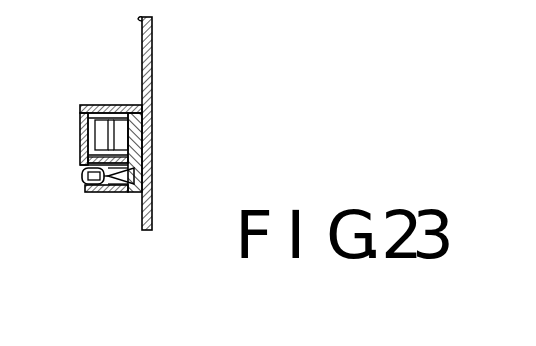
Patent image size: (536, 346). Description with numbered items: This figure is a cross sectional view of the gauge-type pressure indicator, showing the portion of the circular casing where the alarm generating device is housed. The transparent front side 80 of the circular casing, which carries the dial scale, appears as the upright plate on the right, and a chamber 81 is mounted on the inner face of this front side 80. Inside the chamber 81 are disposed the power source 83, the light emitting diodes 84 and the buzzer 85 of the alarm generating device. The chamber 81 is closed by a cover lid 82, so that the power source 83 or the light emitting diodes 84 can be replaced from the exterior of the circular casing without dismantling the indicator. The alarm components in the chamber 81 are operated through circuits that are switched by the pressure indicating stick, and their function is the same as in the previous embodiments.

The transparent front side 80 is at (152, 45).
The chamber 81 is at (130, 103).
The cover lid 82 is at (152, 160).
The power source 83 is at (94, 105).
The light emitting diodes 84 is at (125, 193).
The buzzer 85 is at (85, 178).